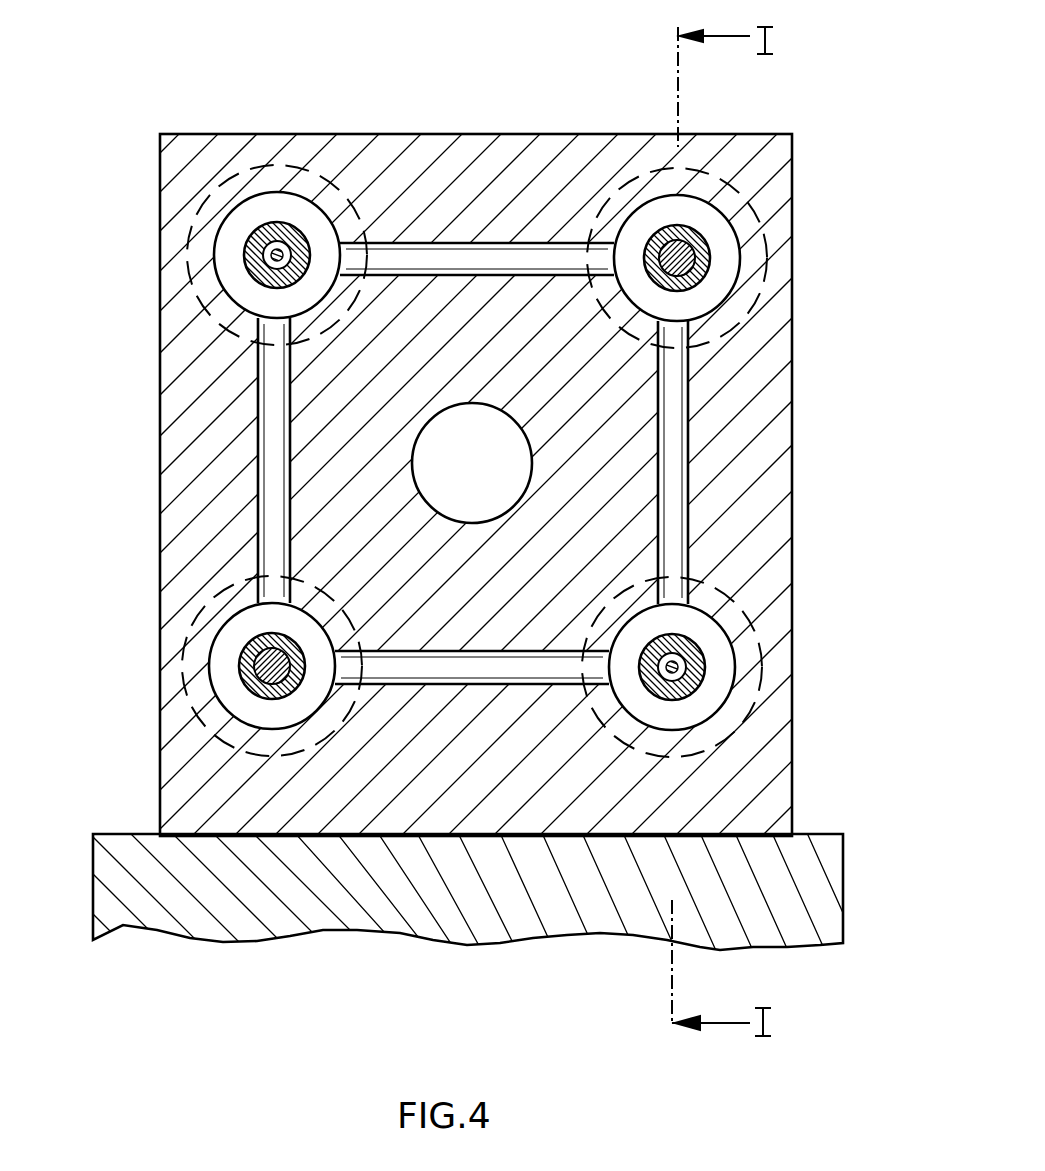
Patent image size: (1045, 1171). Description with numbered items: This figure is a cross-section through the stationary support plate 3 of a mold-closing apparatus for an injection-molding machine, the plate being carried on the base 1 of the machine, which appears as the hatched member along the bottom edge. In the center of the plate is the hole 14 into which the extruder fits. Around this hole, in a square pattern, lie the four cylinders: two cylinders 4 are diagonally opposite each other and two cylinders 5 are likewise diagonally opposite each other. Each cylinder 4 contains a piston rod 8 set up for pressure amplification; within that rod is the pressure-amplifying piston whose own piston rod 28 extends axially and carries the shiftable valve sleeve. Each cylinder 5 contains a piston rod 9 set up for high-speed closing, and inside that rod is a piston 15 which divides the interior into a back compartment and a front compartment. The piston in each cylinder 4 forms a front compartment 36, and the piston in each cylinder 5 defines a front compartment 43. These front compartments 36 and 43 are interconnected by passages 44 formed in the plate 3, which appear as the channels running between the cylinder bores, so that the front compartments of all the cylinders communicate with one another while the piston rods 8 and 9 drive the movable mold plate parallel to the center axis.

The base 1 is at (826, 895).
The stationary support plate 3 is at (770, 373).
The cylinder 4 is at (217, 198).
The cylinder 5 is at (603, 218).
The piston rod 8 is at (273, 249).
The piston rod 9 is at (706, 250).
The hole 14 is at (492, 469).
The piston 15 is at (688, 243).
The piston rod 28 is at (268, 266).
The front compartment 36 is at (225, 258).
The front compartment 43 is at (715, 289).
The passages 44 is at (470, 245).